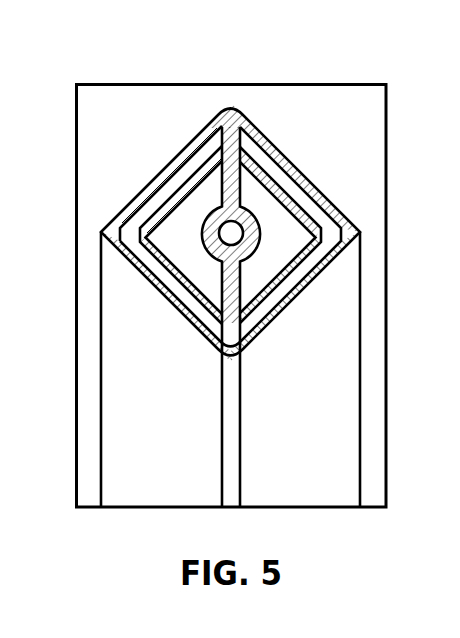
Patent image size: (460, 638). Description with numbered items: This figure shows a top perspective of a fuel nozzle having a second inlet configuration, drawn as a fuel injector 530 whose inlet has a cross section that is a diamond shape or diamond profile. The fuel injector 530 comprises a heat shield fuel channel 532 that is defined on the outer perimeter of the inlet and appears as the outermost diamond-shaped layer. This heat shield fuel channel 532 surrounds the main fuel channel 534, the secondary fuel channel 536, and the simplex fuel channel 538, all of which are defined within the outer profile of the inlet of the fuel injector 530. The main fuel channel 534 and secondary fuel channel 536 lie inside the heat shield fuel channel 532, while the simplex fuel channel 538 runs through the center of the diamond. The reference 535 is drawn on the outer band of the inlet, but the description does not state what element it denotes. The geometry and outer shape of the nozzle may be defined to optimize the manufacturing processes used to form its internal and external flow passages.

The fuel injector 530 is at (135, 361).
The heat shield fuel channel 532 is at (333, 232).
The main fuel channel 534 is at (271, 221).
The outer tube 535 is at (210, 123).
The secondary fuel channel 536 is at (178, 218).
The simplex fuel channel 538 is at (232, 233).